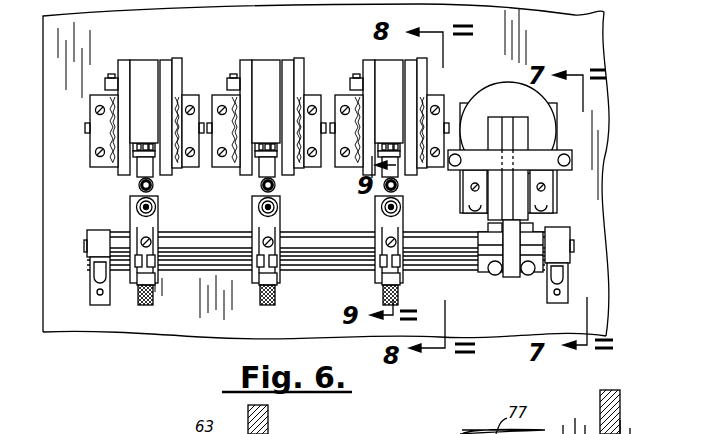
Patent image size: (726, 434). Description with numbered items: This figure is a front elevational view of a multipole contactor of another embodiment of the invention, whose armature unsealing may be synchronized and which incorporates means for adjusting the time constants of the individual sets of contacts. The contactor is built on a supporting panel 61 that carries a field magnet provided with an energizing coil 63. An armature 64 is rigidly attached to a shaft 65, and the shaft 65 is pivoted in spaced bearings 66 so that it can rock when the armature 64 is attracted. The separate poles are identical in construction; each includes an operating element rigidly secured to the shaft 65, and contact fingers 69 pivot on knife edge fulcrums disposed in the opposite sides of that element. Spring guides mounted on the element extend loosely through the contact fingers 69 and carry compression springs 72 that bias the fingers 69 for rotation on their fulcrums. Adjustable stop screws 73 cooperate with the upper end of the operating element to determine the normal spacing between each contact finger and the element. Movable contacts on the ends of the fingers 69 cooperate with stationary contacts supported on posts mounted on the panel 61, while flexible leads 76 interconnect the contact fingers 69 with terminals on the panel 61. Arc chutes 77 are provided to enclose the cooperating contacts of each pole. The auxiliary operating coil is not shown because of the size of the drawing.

The supporting panel 61 is at (547, 170).
The energizing coil 63 is at (505, 88).
The armature 64 is at (550, 208).
The shaft 65 is at (439, 259).
The bearings 66 is at (92, 265).
The contact fingers 69 is at (147, 222).
The compression springs 72 is at (135, 207).
The adjustable stop screws 73 is at (138, 185).
The flexible leads 76 is at (262, 290).
The arc chutes 77 is at (147, 68).